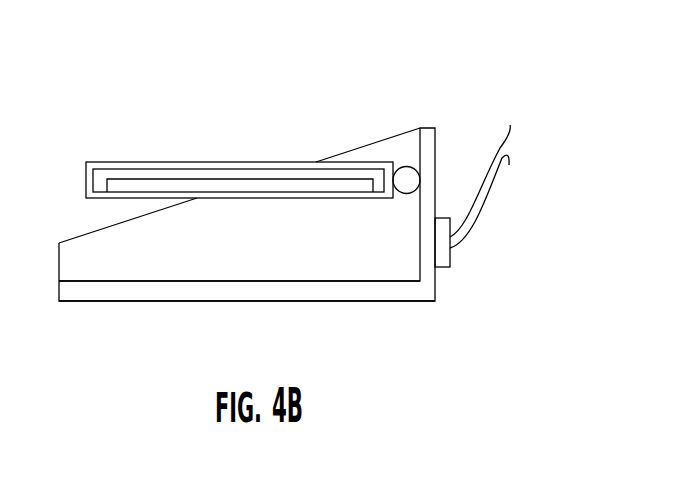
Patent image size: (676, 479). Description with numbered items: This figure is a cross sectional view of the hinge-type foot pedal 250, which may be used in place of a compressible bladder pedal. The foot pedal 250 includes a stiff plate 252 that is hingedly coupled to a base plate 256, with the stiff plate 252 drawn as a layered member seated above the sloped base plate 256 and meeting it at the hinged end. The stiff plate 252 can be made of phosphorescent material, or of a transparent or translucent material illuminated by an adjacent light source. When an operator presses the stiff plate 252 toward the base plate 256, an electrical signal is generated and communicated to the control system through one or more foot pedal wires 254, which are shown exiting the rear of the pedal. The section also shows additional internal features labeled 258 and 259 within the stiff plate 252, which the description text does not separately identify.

The hinge-type foot pedal 250 is at (137, 116).
The stiff plate 252 is at (195, 162).
The foot pedal wires 254 is at (482, 203).
The base plate 256 is at (197, 301).
The frame 258 is at (105, 180).
The sensor element 259 is at (267, 190).